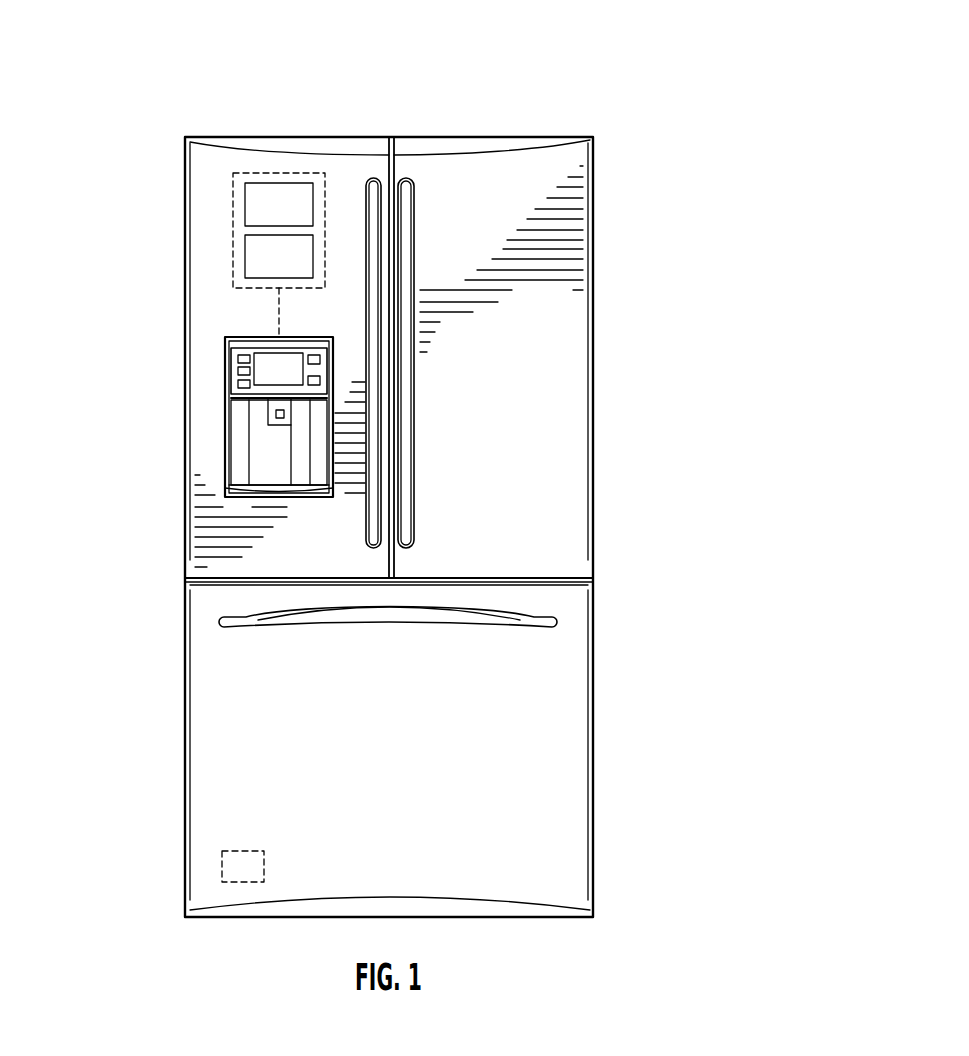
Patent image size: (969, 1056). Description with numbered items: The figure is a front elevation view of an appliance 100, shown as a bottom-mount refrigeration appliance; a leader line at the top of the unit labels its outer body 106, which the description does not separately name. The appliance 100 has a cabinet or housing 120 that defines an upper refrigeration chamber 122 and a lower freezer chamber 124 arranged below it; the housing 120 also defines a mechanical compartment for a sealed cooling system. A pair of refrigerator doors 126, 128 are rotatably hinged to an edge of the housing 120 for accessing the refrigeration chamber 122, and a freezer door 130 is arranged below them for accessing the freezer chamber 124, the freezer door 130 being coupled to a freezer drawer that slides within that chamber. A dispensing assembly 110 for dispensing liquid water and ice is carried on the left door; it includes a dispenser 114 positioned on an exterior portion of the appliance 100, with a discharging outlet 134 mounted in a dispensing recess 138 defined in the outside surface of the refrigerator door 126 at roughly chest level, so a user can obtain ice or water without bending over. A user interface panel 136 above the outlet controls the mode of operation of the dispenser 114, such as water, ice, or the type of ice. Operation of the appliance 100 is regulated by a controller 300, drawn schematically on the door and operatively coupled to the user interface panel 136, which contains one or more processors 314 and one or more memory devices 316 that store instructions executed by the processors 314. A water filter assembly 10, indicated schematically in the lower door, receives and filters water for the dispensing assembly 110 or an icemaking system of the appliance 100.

The appliance 100 is at (594, 52).
The cabinet 106 is at (602, 136).
The dispensing assembly 110 is at (220, 322).
The dispenser 114 is at (279, 472).
The cabinet or housing 120 is at (203, 695).
The refrigeration chamber 122 is at (568, 478).
The freezer chamber 124 is at (585, 623).
The refrigerator door 126 is at (207, 246).
The refrigerator door 128 is at (562, 234).
The freezer door 130 is at (580, 710).
The discharging outlet 134 is at (258, 404).
The user interface panel 136 is at (237, 378).
The dispensing recess 138 is at (300, 478).
The controller 300 is at (212, 249).
The processor 314 is at (279, 204).
The memory device 316 is at (279, 256).
The water filter assembly 10 is at (222, 868).